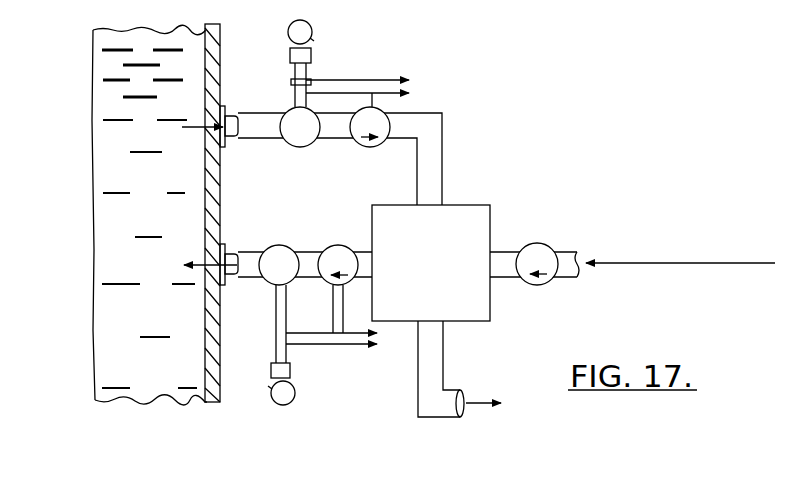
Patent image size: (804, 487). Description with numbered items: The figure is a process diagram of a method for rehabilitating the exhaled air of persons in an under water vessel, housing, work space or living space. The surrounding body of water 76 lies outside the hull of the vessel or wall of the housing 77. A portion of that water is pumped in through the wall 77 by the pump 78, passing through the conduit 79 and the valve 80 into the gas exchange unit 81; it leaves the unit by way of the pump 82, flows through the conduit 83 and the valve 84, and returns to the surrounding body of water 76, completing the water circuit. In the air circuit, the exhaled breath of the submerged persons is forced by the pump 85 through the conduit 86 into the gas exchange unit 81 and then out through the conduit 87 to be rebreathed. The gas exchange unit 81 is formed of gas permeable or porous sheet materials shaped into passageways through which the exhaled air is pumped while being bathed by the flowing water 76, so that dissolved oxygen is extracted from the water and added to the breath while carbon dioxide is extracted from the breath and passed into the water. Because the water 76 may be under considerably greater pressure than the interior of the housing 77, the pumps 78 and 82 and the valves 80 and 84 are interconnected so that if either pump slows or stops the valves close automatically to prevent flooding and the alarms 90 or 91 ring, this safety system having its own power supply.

The surrounding body of water 76 is at (114, 177).
The hull or wall of housing 77 is at (211, 63).
The pump 78 is at (371, 147).
The conduit 79 is at (258, 120).
The valve 80 is at (300, 147).
The gas exchange unit 81 is at (478, 210).
The pump 82 is at (339, 247).
The conduit 83 is at (306, 255).
The valve 84 is at (278, 248).
The pump 85 is at (537, 285).
The conduit 86 is at (509, 256).
The conduit 87 is at (437, 352).
The alarm 90 is at (311, 54).
The alarm 91 is at (291, 374).